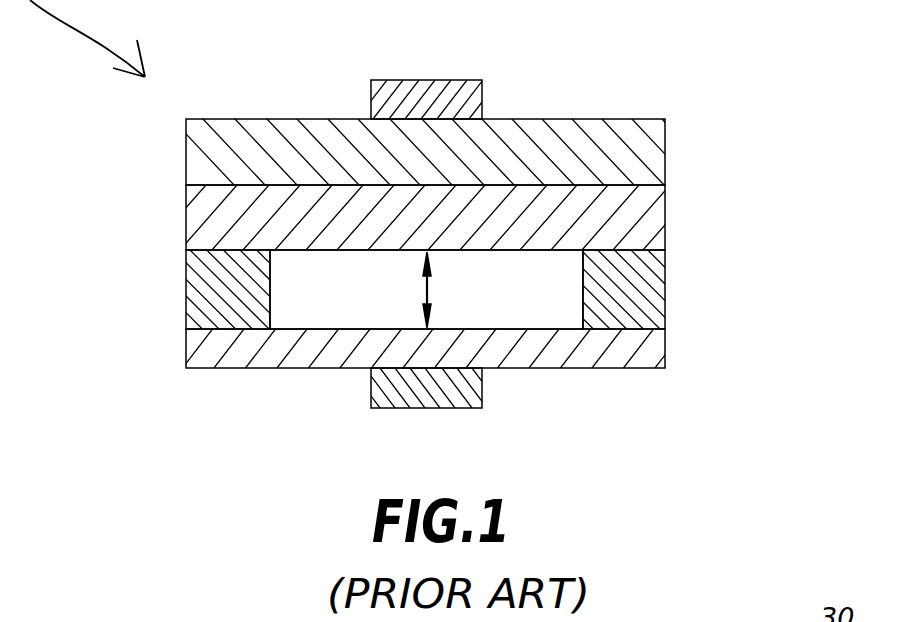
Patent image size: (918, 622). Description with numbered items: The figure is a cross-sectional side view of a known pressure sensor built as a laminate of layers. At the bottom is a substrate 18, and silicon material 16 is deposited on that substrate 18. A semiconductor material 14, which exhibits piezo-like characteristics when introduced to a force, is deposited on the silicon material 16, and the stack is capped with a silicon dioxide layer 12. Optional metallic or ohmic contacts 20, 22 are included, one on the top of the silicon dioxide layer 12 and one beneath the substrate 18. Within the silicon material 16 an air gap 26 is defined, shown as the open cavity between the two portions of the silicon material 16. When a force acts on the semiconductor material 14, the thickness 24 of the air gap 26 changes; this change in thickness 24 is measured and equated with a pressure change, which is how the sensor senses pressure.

The silicon dioxide layer 12 is at (647, 140).
The semiconductor material 14 is at (640, 207).
The silicon material 16 is at (210, 285).
The substrate 18 is at (650, 370).
The metallic or ohmic contact 20 is at (483, 95).
The metallic or ohmic contact 22 is at (442, 395).
The thickness 24 is at (449, 290).
The air gap 26 is at (313, 307).